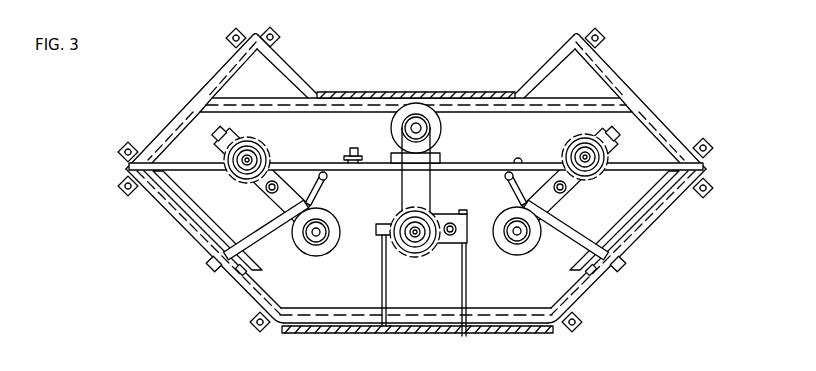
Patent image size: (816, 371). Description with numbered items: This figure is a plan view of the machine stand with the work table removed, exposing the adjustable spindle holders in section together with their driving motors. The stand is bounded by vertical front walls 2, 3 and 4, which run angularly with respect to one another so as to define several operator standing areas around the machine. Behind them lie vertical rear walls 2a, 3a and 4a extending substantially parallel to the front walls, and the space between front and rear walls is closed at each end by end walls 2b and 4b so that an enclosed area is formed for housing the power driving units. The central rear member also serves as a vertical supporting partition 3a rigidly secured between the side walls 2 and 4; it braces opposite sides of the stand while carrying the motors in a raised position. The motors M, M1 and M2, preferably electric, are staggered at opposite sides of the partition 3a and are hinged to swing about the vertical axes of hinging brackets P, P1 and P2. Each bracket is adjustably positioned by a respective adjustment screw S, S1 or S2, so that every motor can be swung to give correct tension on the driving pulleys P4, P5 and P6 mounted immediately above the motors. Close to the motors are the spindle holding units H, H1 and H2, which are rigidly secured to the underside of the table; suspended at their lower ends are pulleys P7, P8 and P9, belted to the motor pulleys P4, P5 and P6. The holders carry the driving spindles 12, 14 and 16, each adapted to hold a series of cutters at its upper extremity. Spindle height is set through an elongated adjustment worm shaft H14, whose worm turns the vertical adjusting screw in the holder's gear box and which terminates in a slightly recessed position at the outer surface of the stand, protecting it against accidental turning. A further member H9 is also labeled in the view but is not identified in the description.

The vertical front wall 2 is at (193, 246).
The vertical rear wall 2a is at (291, 75).
The end wall 2b is at (177, 110).
The vertical front wall 3 is at (442, 334).
The vertical supporting partition 3a is at (337, 98).
The vertical front wall 4 is at (652, 229).
The vertical rear wall 4a is at (553, 56).
The end wall 4b is at (659, 110).
The driving spindle 12 is at (255, 148).
The driving spindle 14 is at (404, 239).
The driving spindle 16 is at (606, 152).
The power driving unit M is at (420, 105).
The power driving unit M1 is at (325, 257).
The power driving unit M2 is at (525, 256).
The hinging bracket P is at (269, 241).
The hinging bracket P1 is at (567, 237).
The hinging bracket P2 is at (451, 160).
The driving pulley P4 is at (330, 226).
The driving pulley P5 is at (434, 128).
The driving pulley P6 is at (504, 247).
The pulley P7 is at (253, 185).
The pulley P8 is at (429, 250).
The pulley P9 is at (587, 184).
The spindle holding unit H is at (418, 250).
The spindle holding unit H1 is at (236, 182).
The spindle holding unit H2 is at (597, 176).
The left support stand H9 is at (384, 288).
The adjustment worm shaft H14 is at (467, 290).
The adjustment screw S is at (356, 151).
The adjustment screw S1 is at (218, 275).
The adjustment screw S2 is at (613, 272).